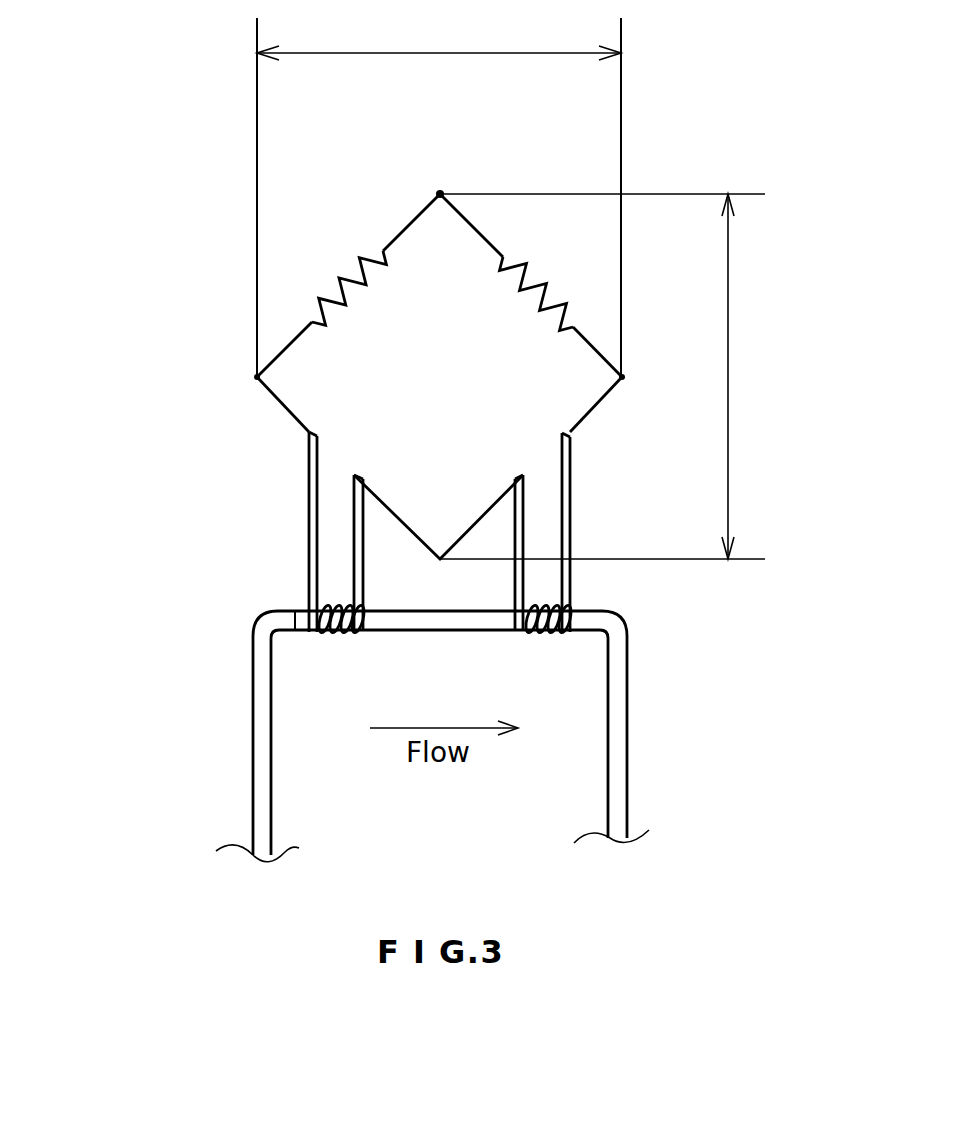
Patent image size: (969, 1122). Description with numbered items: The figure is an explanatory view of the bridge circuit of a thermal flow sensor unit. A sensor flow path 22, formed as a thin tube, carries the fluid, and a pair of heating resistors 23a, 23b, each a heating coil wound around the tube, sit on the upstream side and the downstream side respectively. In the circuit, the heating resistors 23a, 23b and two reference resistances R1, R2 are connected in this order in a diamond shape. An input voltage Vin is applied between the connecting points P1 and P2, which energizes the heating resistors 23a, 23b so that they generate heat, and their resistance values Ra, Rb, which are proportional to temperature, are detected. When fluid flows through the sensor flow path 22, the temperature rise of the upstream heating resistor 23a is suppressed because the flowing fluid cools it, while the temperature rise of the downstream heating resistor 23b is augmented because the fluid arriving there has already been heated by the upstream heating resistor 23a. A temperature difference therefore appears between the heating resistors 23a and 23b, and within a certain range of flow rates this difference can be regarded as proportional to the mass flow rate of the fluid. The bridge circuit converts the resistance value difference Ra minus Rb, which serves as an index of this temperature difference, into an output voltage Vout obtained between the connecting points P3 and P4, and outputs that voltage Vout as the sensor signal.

The sensor flow path 22 is at (252, 742).
The heating resistor 23a is at (308, 508).
The heating resistor 23b is at (572, 572).
The resistance value Ra is at (342, 639).
The resistance value Rb is at (549, 639).
The reference resistance R1 is at (327, 277).
The reference resistance R2 is at (565, 307).
The connecting point P1 is at (257, 377).
The connecting point P2 is at (622, 377).
The connecting point P3 is at (440, 559).
The connecting point P4 is at (440, 194).
The input voltage Vin is at (439, 192).
The output voltage Vout is at (626, 376).